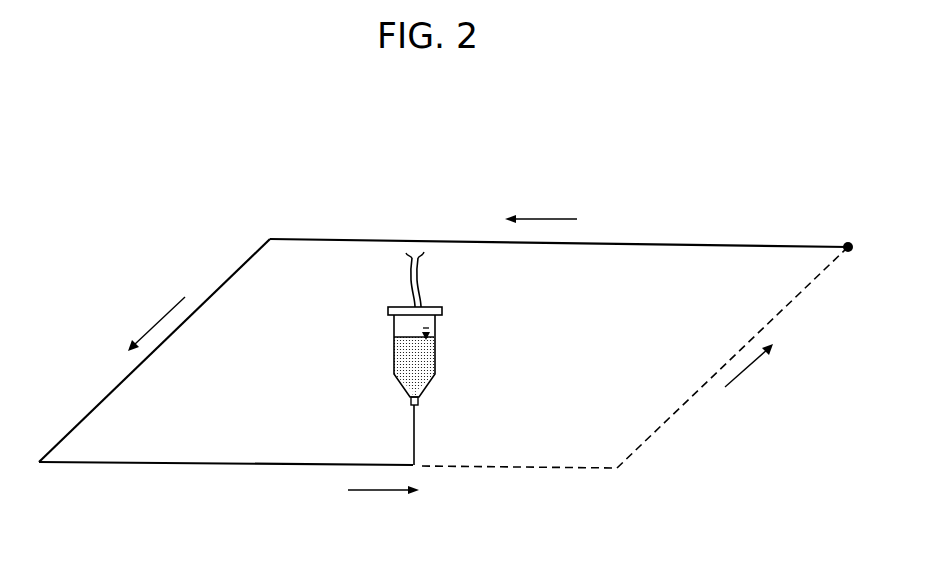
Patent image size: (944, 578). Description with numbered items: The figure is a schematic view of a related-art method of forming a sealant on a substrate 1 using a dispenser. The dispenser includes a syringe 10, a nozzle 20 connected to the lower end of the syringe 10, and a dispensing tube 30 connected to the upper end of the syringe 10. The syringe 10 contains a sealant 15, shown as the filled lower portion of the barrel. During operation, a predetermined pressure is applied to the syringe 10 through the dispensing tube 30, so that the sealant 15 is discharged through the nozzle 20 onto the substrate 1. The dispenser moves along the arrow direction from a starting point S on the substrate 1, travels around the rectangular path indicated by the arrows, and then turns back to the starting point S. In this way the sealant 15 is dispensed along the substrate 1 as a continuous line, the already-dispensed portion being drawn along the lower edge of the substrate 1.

The substrate 1 is at (676, 161).
The starting point S is at (847, 230).
The syringe 10 is at (431, 335).
The sealant 15 is at (428, 362).
The nozzle 20 is at (419, 402).
The dispensing tube 30 is at (418, 284).